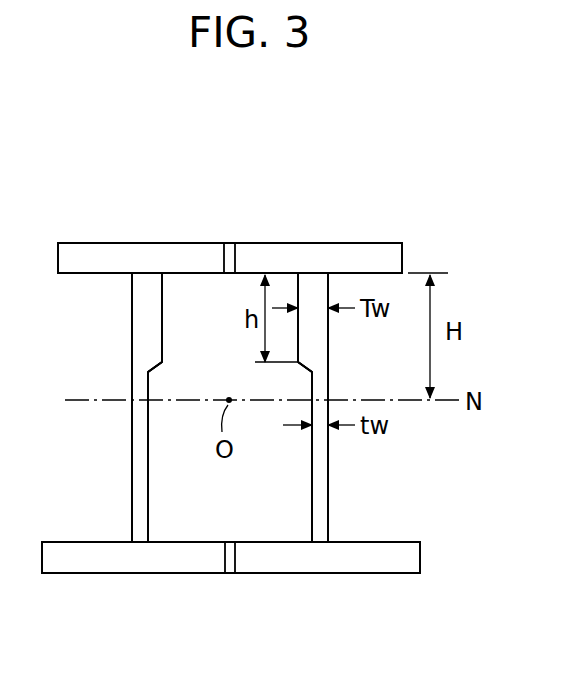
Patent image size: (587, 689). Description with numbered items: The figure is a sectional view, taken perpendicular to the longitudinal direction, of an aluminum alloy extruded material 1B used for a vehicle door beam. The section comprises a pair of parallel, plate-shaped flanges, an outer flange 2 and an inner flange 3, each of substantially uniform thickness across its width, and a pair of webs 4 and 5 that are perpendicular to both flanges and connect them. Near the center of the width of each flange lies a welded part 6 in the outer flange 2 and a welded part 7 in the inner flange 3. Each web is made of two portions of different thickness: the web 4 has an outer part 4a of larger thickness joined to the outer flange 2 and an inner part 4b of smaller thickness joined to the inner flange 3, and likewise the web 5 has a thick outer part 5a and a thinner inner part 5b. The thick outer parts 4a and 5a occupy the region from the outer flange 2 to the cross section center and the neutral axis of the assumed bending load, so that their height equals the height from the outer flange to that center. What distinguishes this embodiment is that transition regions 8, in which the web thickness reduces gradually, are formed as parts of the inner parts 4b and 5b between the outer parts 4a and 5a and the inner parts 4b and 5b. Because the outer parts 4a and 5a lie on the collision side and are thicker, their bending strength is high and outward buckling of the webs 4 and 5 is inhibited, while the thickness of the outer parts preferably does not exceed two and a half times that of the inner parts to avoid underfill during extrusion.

The aluminum alloy extruded material 1B is at (278, 182).
The outer flange 2 is at (172, 250).
The inner flange 3 is at (163, 573).
The web 4 is at (93, 420).
The outer part 4a is at (131, 327).
The inner part 4b is at (131, 490).
The web 5 is at (352, 450).
The outer part 5a is at (315, 343).
The inner part 5b is at (320, 505).
The welded part 6 is at (229, 275).
The welded part 7 is at (230, 573).
The transition region 8 is at (155, 369).